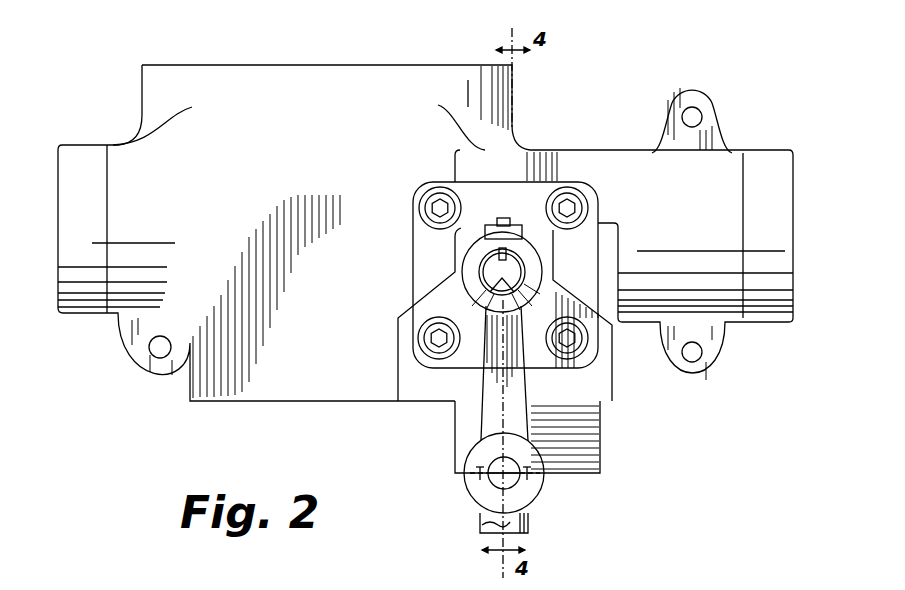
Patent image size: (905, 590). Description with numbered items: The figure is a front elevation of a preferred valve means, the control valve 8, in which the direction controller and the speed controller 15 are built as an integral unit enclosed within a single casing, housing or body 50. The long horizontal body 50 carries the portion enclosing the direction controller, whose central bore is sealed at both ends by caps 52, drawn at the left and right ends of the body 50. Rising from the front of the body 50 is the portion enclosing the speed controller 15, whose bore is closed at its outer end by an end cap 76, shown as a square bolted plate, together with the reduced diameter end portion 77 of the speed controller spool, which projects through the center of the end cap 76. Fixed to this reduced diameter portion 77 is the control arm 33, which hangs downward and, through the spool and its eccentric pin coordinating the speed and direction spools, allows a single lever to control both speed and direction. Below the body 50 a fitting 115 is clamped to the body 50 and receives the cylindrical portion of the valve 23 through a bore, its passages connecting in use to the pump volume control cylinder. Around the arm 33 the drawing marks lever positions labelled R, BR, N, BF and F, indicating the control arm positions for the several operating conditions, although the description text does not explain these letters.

The control valve 8 is at (208, 63).
The body 50 is at (266, 277).
The caps 52 is at (70, 206).
The end cap 76 is at (505, 275).
The reduced diameter end portion 77 is at (480, 277).
The speed controller 15 is at (603, 240).
The control arm 33 is at (490, 420).
The fitting 115 is at (600, 440).
The valve 23 is at (533, 524).
The reverse position R is at (500, 280).
The reverse brake position BR is at (502, 280).
The forward brake position BF is at (502, 280).
The forward position F is at (502, 280).
The neutral position N is at (500, 505).